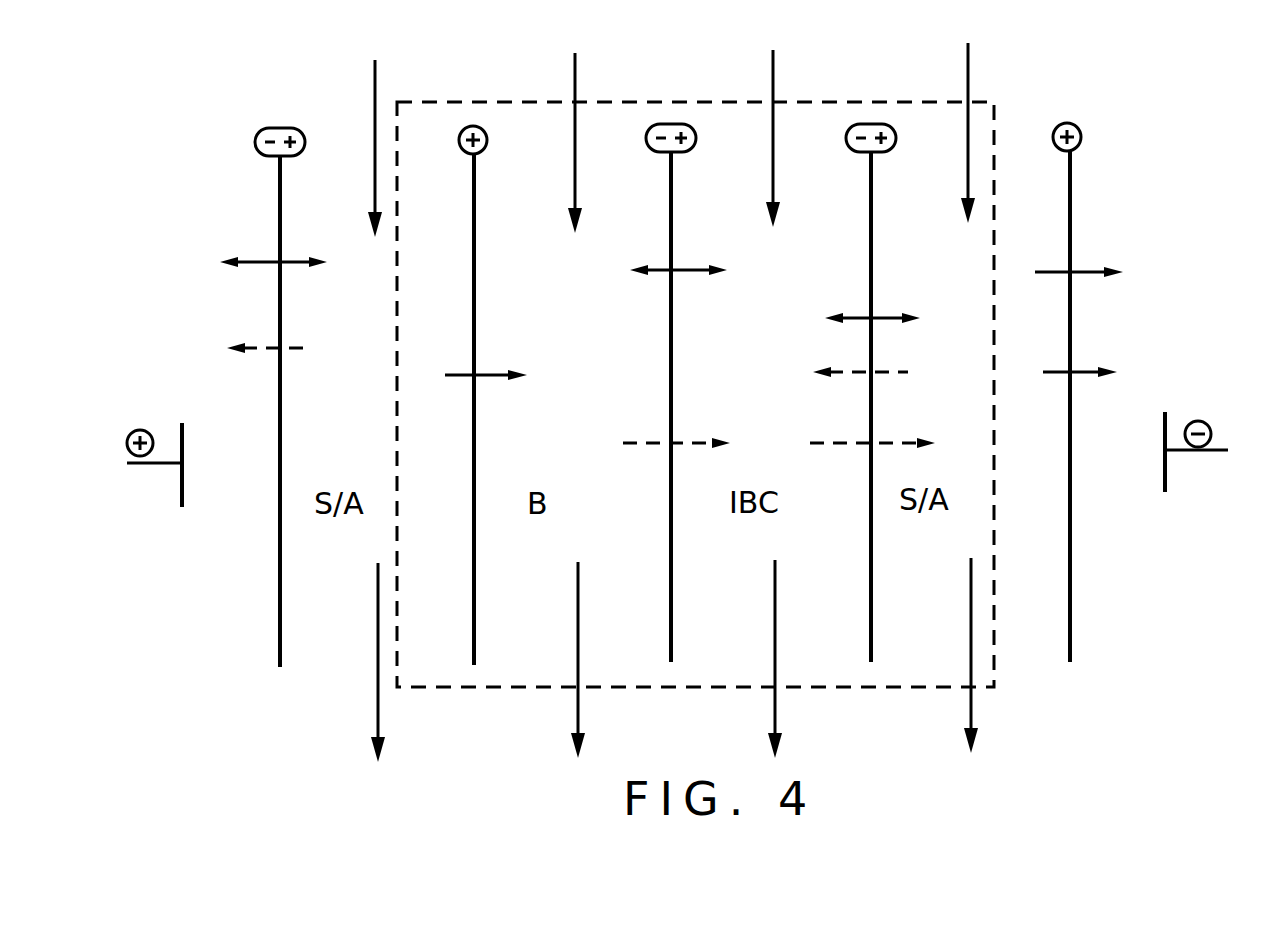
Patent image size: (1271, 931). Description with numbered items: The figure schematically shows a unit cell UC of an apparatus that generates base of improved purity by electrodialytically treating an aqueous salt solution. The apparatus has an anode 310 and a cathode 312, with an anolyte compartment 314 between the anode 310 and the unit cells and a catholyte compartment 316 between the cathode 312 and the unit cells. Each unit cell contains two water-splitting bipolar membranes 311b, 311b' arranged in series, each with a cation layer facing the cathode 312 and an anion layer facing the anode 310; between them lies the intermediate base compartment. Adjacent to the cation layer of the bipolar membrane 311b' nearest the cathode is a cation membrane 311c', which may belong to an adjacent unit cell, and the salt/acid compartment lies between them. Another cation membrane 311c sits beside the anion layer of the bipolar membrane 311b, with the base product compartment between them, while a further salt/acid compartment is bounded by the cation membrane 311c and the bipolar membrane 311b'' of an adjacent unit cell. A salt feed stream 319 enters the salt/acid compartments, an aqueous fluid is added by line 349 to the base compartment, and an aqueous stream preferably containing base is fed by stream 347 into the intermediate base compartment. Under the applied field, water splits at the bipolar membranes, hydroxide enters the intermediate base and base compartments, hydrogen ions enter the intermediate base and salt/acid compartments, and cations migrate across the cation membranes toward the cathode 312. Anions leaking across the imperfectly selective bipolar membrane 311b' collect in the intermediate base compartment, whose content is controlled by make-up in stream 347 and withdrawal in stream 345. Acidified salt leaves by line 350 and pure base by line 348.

The unit cell UC is at (995, 104).
The salt feed stream 319 is at (372, 83).
The line 349 is at (573, 70).
The stream 347 is at (771, 70).
The line 350 is at (376, 706).
The line 348 is at (576, 712).
The stream 345 is at (773, 708).
The bipolar membrane 311b'' is at (295, 397).
The cation membrane 311c is at (485, 395).
The bipolar membrane 311b is at (675, 393).
The bipolar membrane 311b' is at (872, 393).
The cation membrane 311c' is at (1088, 392).
The anolyte compartment 314 is at (218, 428).
The anode 310 is at (170, 466).
The catholyte compartment 316 is at (1122, 415).
The cathode 312 is at (1215, 452).